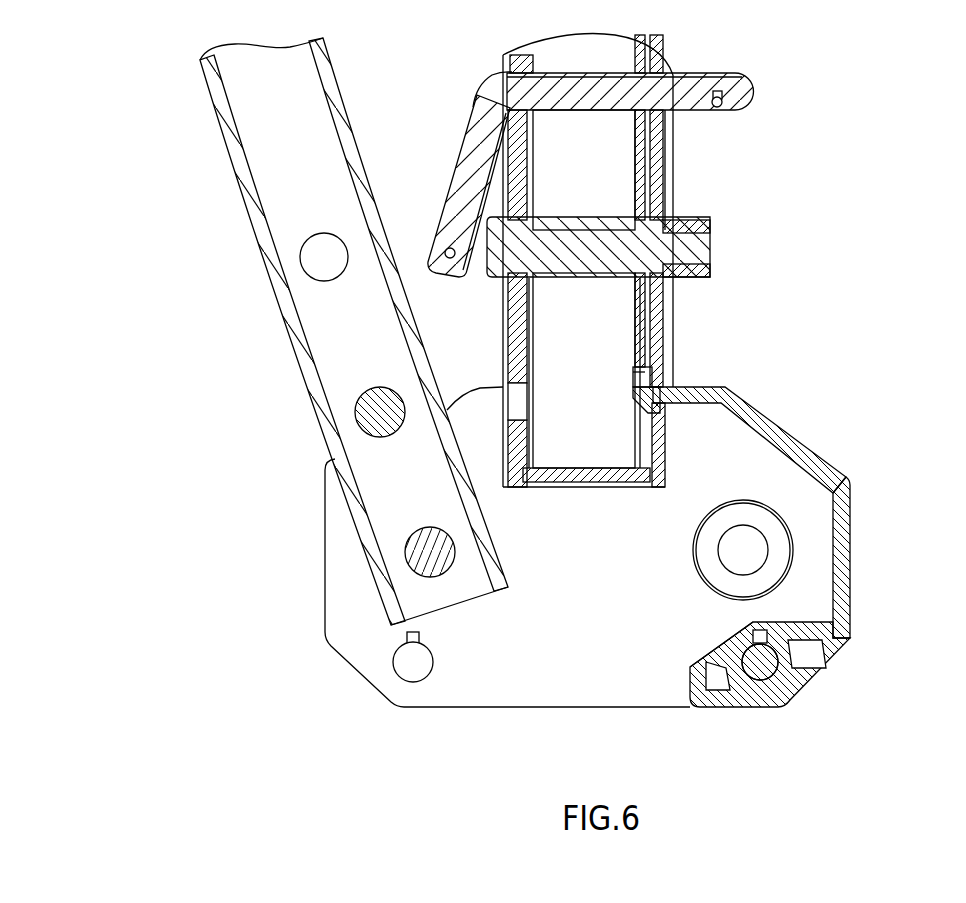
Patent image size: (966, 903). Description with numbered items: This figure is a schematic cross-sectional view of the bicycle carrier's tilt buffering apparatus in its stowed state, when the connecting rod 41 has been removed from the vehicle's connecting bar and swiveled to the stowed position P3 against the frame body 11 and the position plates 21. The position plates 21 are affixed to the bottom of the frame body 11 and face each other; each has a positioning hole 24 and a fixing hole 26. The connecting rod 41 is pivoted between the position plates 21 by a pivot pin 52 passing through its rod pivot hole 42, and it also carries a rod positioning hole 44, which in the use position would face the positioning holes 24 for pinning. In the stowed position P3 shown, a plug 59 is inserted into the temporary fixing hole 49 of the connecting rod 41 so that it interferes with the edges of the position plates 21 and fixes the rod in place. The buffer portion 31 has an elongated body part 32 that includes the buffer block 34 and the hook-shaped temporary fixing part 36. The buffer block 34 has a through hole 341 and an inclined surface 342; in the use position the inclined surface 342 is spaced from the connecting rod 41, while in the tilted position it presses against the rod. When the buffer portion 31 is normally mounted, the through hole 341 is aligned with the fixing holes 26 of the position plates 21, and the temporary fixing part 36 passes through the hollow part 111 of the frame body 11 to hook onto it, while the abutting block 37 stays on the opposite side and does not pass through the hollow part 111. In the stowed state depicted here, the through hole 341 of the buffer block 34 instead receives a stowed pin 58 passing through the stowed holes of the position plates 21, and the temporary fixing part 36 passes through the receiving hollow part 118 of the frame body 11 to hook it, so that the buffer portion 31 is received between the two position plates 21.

The frame body 11 is at (680, 186).
The hollow part 111 is at (503, 403).
The receiving hollow part 118 is at (653, 407).
The temporary fixing part 36 is at (635, 370).
The abutting block 37 is at (672, 405).
The buffer portion 31 is at (778, 402).
The elongated body part 32 is at (797, 427).
The positioning hole 24 is at (768, 550).
The buffer block 34 is at (691, 697).
The inclined surface 342 is at (733, 640).
The through hole 341 is at (798, 708).
The stowed pin 58 is at (758, 680).
The position plate 21 is at (447, 708).
The fixing hole 26 is at (393, 673).
The connecting rod 41 is at (302, 331).
The stowed position P3 is at (213, 128).
The rod positioning hole 44 is at (300, 261).
The temporary fixing hole 49 is at (294, 421).
The plug 59 is at (355, 411).
The rod pivot hole 42 is at (325, 576).
The pivot pin 52 is at (410, 565).